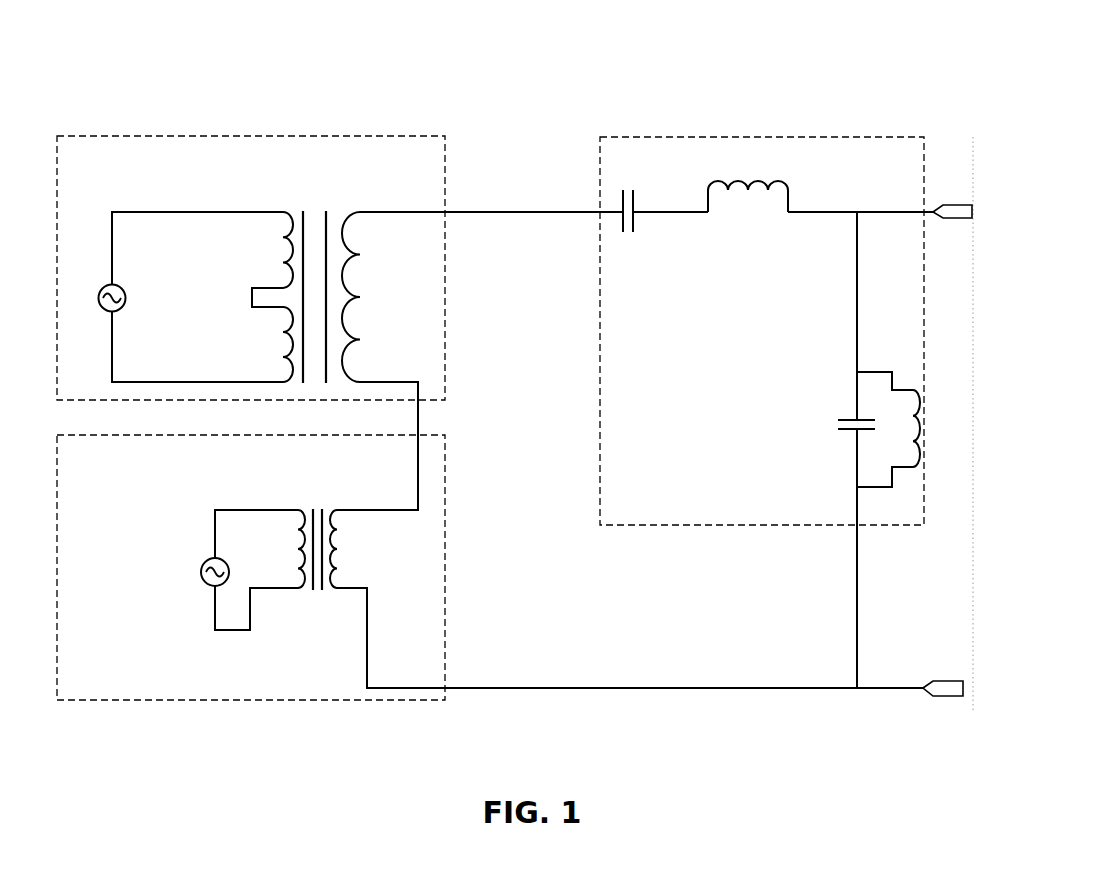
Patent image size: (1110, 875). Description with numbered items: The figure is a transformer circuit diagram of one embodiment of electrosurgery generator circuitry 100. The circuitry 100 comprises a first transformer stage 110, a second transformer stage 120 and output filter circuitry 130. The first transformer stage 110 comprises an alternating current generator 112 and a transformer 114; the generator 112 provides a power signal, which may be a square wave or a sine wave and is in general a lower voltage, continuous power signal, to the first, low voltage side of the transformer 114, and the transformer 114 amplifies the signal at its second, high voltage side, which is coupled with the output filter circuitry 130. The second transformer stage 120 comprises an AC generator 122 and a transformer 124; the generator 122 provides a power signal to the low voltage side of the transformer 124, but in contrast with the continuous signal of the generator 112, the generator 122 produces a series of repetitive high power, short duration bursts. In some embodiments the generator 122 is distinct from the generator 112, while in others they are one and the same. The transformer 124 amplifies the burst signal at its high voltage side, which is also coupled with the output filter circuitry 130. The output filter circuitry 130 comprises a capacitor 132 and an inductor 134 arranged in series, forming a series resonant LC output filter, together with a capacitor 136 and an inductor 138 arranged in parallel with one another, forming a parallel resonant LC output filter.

The electrosurgery generator circuitry 100 is at (308, 82).
The first transformer stage 110 is at (182, 135).
The alternating current (AC) generator 112 is at (112, 285).
The transformer 114 is at (225, 202).
The second transformer stage 120 is at (173, 700).
The AC generator 122 is at (207, 563).
The transformer 124 is at (295, 507).
The output filter circuitry 130 is at (823, 137).
The capacitor 132 is at (632, 178).
The inductor 134 is at (748, 165).
The capacitor 136 is at (843, 443).
The inductor 138 is at (903, 487).